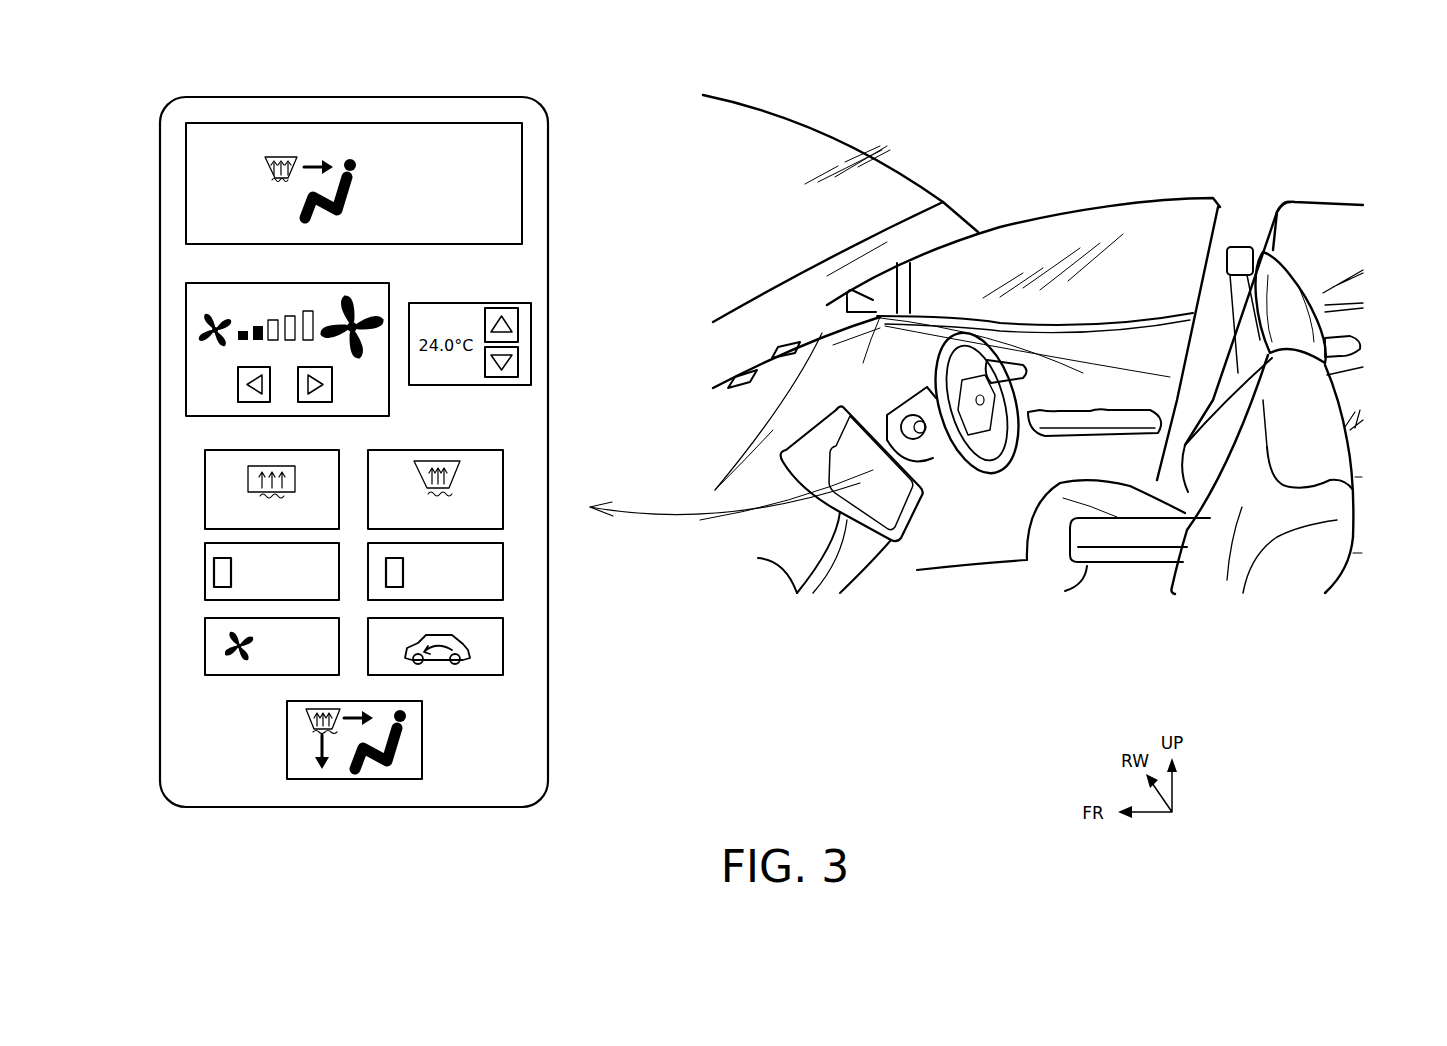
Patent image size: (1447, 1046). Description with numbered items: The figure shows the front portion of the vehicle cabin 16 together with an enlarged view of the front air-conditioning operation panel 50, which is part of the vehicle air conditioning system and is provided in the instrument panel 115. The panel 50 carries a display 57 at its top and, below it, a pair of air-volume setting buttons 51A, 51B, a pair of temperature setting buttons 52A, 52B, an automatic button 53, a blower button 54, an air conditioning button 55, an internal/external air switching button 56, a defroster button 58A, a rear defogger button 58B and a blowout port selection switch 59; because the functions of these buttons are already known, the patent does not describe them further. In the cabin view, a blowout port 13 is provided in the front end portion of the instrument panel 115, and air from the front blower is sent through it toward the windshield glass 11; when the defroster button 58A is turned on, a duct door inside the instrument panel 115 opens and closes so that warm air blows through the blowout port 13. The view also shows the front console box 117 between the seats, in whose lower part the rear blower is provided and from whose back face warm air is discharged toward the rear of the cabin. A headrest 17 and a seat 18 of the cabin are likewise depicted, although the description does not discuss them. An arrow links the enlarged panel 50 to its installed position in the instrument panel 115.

The front air-conditioning operation panel 50 is at (377, 97).
The display 57 is at (455, 145).
The air-volume setting button 51A is at (332, 374).
The air-volume setting button 51B is at (238, 374).
The temperature setting button 52A is at (502, 310).
The temperature setting button 52B is at (502, 377).
The automatic button 53 is at (205, 577).
The blower button 54 is at (205, 653).
The air conditioning button 55 is at (503, 582).
The internal/external air switching button 56 is at (503, 645).
The defroster button 58A is at (503, 490).
The rear defogger button 58B is at (205, 497).
The blowout port selection switch 59 is at (422, 717).
The windshield glass 11 is at (900, 178).
The blowout port 13 is at (783, 347).
The instrument panel 115 is at (870, 363).
The vehicle cabin 16 is at (1022, 240).
The headrest 17 is at (1300, 287).
The seat 18 is at (1343, 460).
The front console box 117 is at (1152, 537).